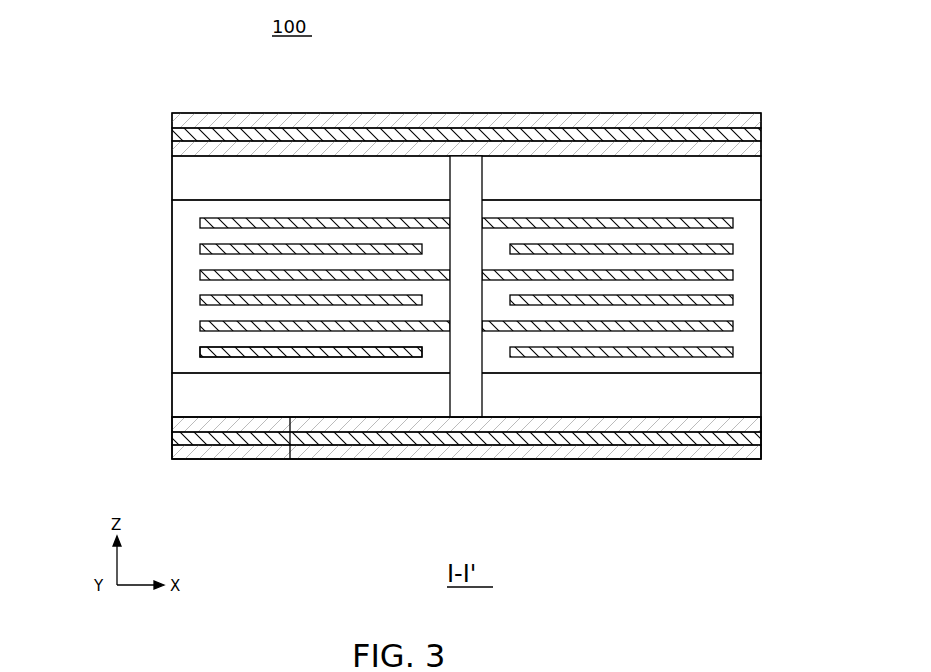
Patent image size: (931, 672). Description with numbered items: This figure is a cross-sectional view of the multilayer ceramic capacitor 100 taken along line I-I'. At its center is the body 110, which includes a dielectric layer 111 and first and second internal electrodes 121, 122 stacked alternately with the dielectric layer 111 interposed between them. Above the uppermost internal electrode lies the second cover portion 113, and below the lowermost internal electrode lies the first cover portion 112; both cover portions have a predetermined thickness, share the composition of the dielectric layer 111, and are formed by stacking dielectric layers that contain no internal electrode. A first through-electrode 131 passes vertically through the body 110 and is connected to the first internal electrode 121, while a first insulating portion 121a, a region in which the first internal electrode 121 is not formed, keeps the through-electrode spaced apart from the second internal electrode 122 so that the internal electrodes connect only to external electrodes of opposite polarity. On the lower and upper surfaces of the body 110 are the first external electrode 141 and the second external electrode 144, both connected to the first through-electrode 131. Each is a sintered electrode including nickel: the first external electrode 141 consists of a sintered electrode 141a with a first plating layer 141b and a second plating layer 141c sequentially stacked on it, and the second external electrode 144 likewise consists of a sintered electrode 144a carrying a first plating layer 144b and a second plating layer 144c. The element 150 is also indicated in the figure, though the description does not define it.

The multilayer ceramic capacitor 100 is at (466, 286).
The body 110 is at (527, 418).
The dielectric layer 111 is at (735, 316).
The first cover portion 112 is at (762, 388).
The second cover portion 113 is at (762, 176).
The first internal electrode 121 is at (200, 326).
The first insulating portion 121a is at (436, 350).
The second internal electrode 122 is at (740, 352).
The first through-electrode 131 is at (470, 157).
The first external electrode 141 is at (400, 441).
The sintered electrode 141a is at (173, 425).
The first plating layer 141b is at (173, 438).
The second plating layer 141c is at (173, 460).
The second external electrode 144 is at (400, 132).
The sintered electrode 144a is at (177, 148).
The first plating layer 144b is at (173, 131).
The second plating layer 144c is at (173, 113).
The insulating layer 150 is at (292, 417).